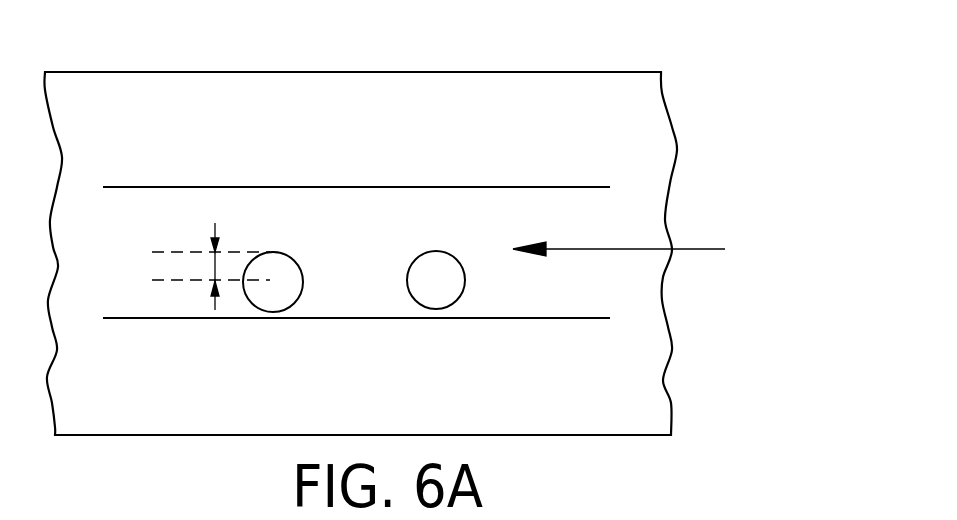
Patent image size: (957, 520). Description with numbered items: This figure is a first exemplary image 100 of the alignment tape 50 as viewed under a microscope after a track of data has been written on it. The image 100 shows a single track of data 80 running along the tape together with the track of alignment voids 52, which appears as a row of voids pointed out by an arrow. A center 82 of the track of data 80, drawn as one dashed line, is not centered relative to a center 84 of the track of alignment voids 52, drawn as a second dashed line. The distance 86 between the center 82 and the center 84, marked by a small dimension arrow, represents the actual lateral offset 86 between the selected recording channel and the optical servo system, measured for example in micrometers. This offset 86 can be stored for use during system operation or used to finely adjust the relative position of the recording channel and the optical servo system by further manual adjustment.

The alignment tape 50 is at (500, 87).
The first exemplary image 100 is at (695, 90).
The track of data 80 is at (208, 197).
The center of the track of data 82 is at (175, 252).
The center of the track of alignment voids 84 is at (173, 282).
The actual lateral offset 86 is at (216, 270).
The track of alignment voids 52 is at (640, 249).